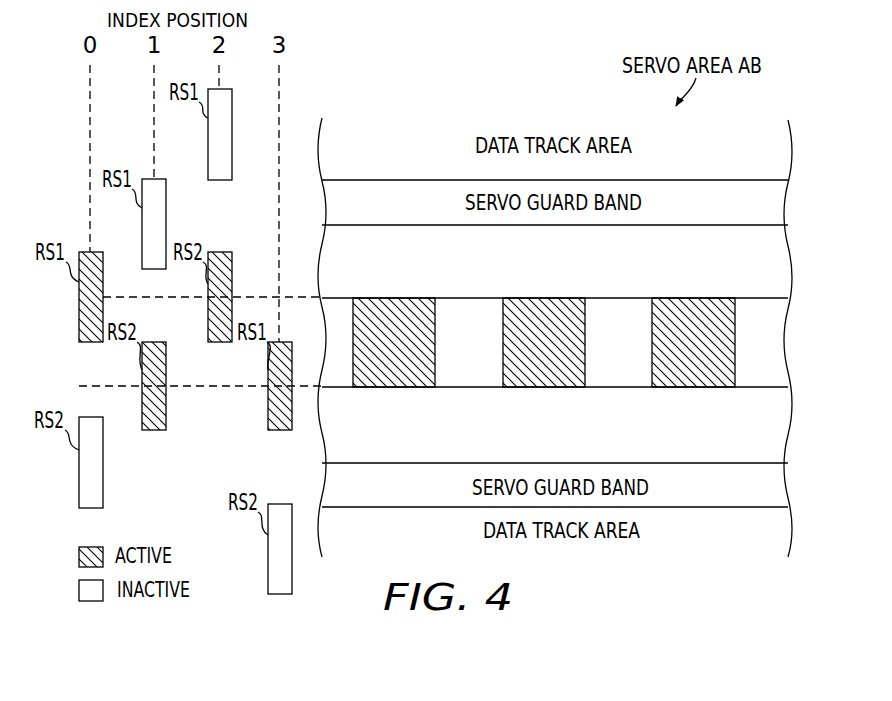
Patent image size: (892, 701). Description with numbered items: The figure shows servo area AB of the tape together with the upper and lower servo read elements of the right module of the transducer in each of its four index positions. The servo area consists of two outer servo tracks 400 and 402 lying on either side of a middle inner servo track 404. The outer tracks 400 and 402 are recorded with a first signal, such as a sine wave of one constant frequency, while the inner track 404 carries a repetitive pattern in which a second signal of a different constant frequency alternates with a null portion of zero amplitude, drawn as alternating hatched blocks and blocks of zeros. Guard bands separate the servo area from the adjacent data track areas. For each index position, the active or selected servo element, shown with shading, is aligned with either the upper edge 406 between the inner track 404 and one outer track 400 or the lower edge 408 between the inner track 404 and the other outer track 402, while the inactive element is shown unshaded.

The outer servo track 400 is at (788, 262).
The outer servo track 402 is at (790, 430).
The inner servo track 404 is at (804, 328).
The upper edge 406 is at (620, 298).
The lower edge 408 is at (620, 387).